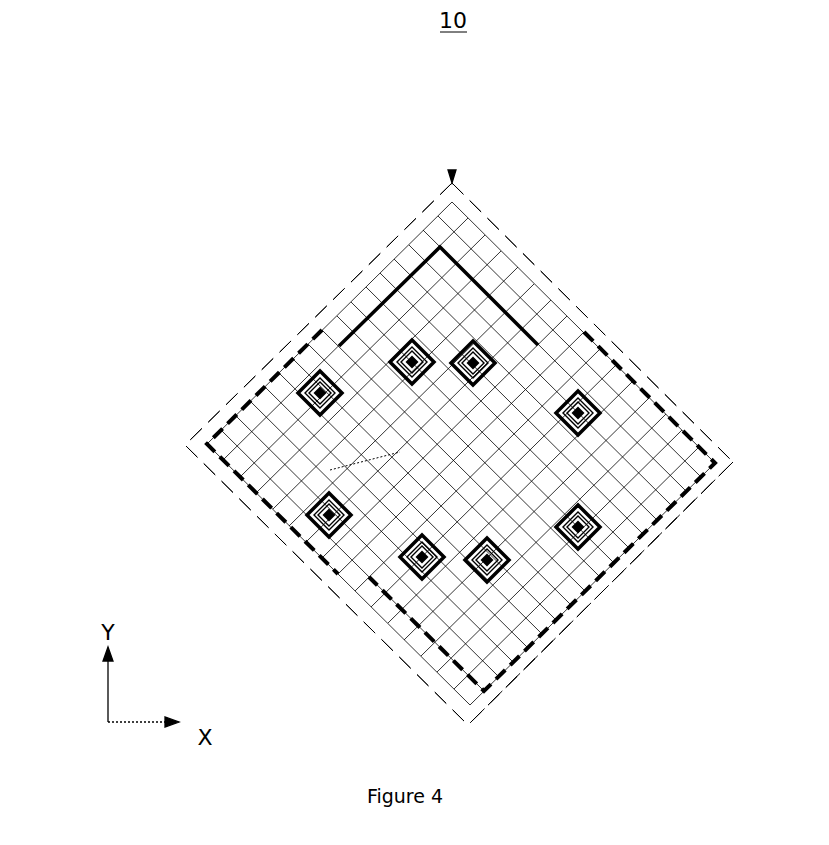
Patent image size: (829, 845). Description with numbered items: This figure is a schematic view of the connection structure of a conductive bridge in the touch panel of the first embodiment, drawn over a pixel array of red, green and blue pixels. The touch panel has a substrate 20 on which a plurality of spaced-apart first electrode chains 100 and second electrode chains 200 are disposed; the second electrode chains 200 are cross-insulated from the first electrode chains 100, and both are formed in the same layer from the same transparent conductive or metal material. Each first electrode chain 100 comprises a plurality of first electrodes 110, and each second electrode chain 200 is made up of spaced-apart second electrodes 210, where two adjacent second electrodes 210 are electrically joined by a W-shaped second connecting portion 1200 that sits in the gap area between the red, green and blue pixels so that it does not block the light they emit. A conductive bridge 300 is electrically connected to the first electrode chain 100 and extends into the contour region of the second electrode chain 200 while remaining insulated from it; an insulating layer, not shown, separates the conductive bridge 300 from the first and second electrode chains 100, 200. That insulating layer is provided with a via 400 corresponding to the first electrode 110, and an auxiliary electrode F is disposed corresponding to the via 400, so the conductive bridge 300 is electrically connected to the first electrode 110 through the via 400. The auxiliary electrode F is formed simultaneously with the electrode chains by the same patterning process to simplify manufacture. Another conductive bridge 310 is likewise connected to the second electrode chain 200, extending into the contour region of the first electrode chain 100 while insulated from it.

The first electrode chain 100 is at (170, 446).
The first electrode 110 is at (652, 390).
The second electrode chain 200 is at (452, 170).
The substrate 20 is at (333, 305).
The other conductive bridge 310 is at (322, 316).
The conductive bridge 300 is at (588, 593).
The second electrode 210 is at (488, 290).
The second connecting portion 1200 is at (330, 470).
The via 400 is at (445, 615).
The auxiliary electrode F is at (633, 568).